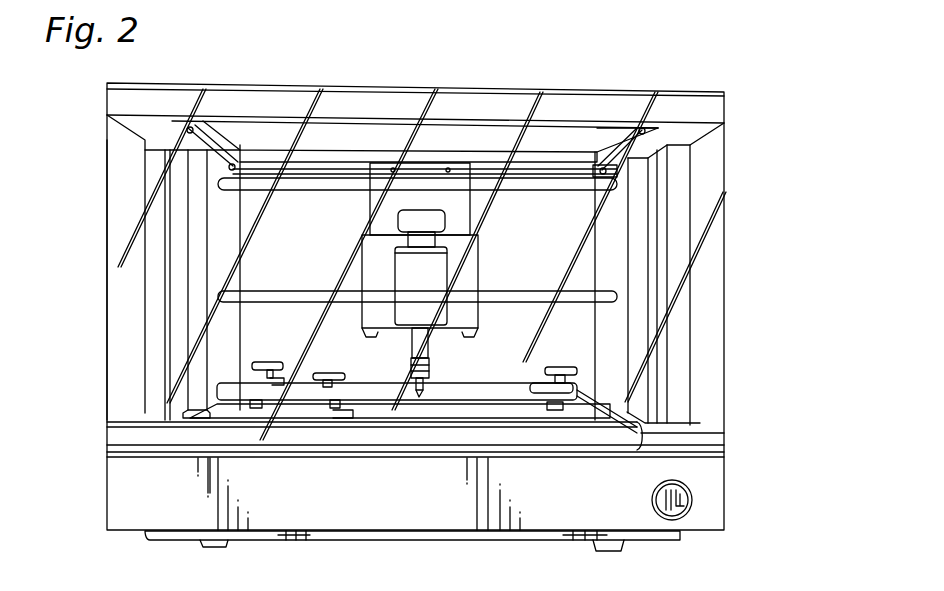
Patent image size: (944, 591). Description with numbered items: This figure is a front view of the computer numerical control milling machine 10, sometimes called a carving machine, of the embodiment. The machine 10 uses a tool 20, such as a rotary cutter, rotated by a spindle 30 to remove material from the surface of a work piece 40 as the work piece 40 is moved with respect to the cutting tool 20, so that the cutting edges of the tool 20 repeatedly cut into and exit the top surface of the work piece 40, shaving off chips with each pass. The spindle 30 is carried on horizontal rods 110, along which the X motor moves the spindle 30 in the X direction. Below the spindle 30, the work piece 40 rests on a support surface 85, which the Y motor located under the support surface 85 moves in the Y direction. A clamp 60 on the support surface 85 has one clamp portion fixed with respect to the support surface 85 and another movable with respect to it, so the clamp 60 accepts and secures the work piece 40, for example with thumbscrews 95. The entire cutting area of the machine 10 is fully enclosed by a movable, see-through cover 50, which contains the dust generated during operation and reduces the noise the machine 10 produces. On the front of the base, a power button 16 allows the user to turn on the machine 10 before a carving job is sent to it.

The CNC milling machine 10 is at (735, 283).
The power button 16 is at (688, 498).
The tool 20 is at (421, 392).
The spindle 30 is at (437, 263).
The work piece 40 is at (495, 383).
The see-through cover 50 is at (113, 293).
The clamp 60 is at (227, 383).
The support surface 85 is at (640, 457).
The thumbscrews 95 is at (320, 372).
The horizontal rods 110 is at (313, 188).